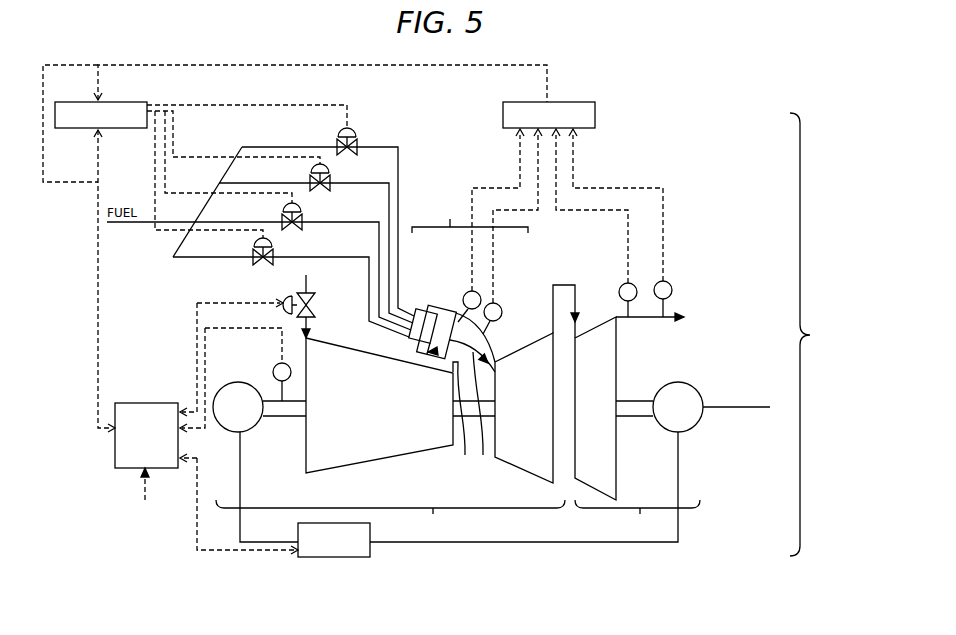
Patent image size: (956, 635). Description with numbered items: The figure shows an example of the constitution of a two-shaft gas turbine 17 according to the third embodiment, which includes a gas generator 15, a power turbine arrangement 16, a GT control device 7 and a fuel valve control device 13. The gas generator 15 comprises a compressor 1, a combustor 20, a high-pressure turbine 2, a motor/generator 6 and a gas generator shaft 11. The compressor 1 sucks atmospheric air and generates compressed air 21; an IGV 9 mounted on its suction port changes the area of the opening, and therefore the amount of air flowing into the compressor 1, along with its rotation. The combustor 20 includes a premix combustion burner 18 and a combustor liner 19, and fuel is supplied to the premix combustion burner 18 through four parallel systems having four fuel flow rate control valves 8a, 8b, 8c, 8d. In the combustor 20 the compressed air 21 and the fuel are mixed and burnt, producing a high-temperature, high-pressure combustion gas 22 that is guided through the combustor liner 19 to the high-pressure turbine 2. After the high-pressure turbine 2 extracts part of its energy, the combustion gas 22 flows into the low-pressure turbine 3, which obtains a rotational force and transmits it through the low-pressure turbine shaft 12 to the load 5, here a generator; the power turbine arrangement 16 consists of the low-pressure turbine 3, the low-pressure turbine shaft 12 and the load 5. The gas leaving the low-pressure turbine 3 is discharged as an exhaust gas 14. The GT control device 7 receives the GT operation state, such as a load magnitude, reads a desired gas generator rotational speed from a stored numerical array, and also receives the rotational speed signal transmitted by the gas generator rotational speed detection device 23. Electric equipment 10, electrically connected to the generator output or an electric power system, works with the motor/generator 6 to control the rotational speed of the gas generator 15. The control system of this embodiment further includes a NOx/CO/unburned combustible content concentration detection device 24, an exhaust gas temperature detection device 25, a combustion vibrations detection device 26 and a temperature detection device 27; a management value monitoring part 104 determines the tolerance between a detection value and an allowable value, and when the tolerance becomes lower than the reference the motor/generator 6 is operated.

The compressor 1 is at (383, 447).
The high-pressure turbine 2 is at (540, 455).
The low-pressure turbine 3 is at (610, 445).
The load 5 is at (695, 383).
The motor/generator 6 is at (235, 432).
The GT control device 7 is at (132, 447).
The fuel flow rate control valve 8a is at (275, 249).
The fuel flow rate control valve 8b is at (303, 214).
The fuel flow rate control valve 8c is at (332, 176).
The fuel flow rate control valve 8d is at (358, 140).
The IGV (Inlet Guide Vane) 9 is at (318, 305).
The electric equipment 10 is at (370, 540).
The gas generator shaft 11 is at (286, 416).
The low-pressure turbine shaft 12 is at (633, 401).
The fuel valve control device 13 is at (102, 118).
The exhaust gas 14 is at (686, 312).
The gas generator 15 is at (424, 530).
The power turbine arrangement 16 is at (631, 530).
The two-shaft gas turbine 17 is at (820, 347).
The premix combustion burner 18 is at (430, 304).
The combustor liner 19 is at (488, 350).
The combustor 20 is at (434, 216).
The compressed air 21 is at (457, 414).
The combustion gas 22 is at (481, 409).
The gas generator rotational speed detection device 23 is at (273, 368).
The NOx/CO/unburned combustible content concentration detection device 24 is at (620, 286).
The exhaust gas temperature detection device 25 is at (670, 285).
The combustion vibrations detection device 26 is at (466, 293).
The temperature detection device 27 is at (500, 305).
The management value monitoring part 104 is at (595, 112).